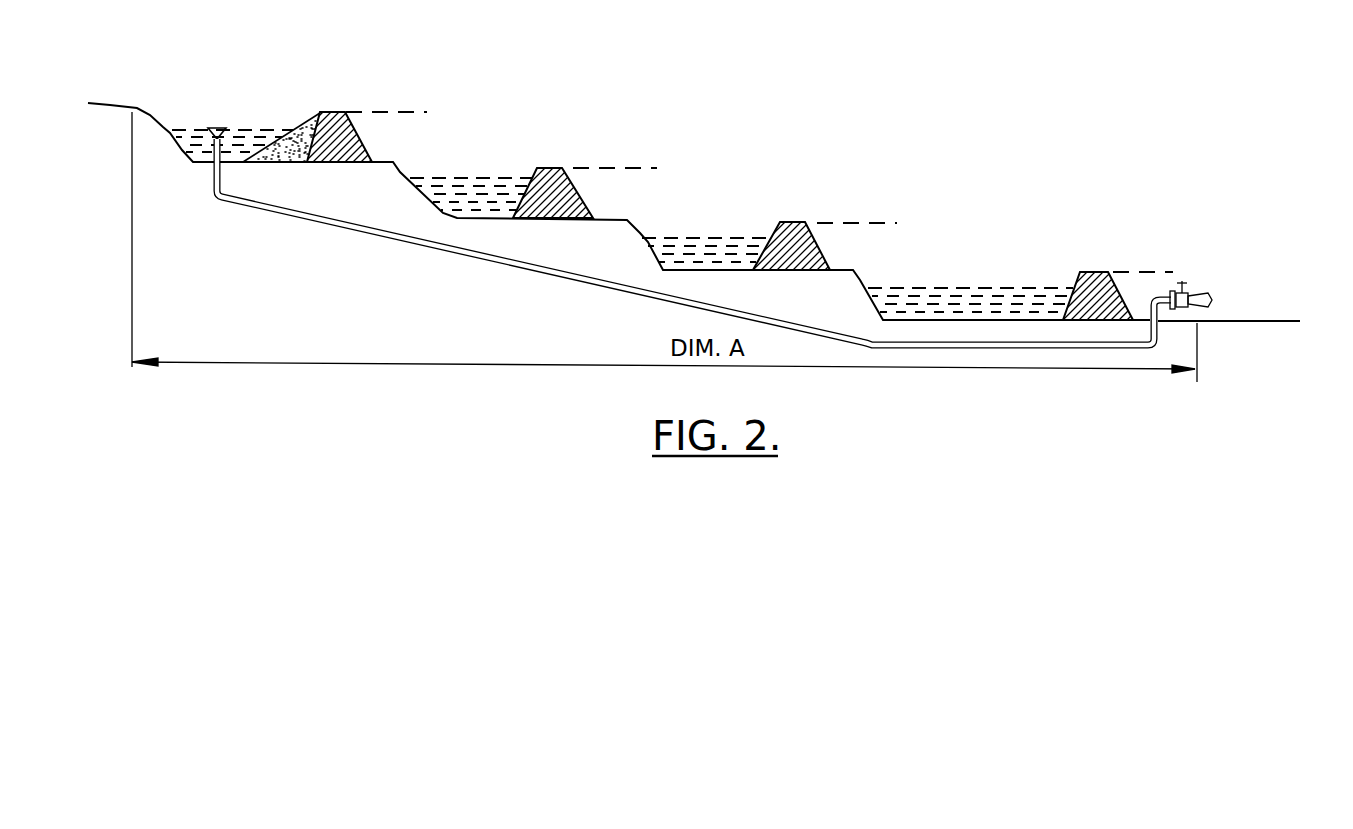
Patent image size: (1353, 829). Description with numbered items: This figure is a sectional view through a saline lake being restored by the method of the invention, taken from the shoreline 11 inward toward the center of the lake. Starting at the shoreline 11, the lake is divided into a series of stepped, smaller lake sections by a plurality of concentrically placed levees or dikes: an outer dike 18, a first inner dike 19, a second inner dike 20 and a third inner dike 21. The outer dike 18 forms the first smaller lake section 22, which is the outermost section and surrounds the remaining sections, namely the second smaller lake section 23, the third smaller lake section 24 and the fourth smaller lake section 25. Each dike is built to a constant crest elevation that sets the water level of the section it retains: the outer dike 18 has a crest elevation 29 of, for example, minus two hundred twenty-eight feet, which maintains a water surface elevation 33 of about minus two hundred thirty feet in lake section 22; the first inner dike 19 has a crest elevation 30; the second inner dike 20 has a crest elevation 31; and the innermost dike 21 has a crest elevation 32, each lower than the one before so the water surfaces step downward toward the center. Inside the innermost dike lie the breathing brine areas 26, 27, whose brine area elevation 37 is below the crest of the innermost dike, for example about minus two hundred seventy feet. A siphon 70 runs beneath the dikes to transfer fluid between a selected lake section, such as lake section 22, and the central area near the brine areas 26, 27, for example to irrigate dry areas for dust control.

The shoreline 11 is at (138, 110).
The outer dike 18 is at (328, 112).
The first inner dike 19 is at (547, 168).
The second inner dike 20 is at (793, 222).
The third inner dike 21 is at (1083, 272).
The first smaller lake section 22 is at (278, 84).
The second smaller lake section 23 is at (495, 178).
The third smaller lake section 24 is at (708, 238).
The fourth smaller lake section 25 is at (970, 288).
The breathing brine area 26 is at (1253, 261).
The breathing brine area 27 is at (1191, 295).
The crest elevation of outer dike 29 is at (387, 112).
The crest elevation of first inner dike 30 is at (610, 168).
The crest elevation of second inner dike 31 is at (857, 223).
The crest elevation of third inner dike 32 is at (1140, 272).
The water surface elevation of outer lake section 33 is at (192, 82).
The brine area elevation 37 is at (1278, 320).
The siphon 70 is at (676, 213).